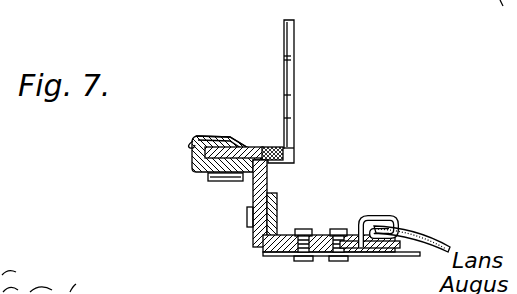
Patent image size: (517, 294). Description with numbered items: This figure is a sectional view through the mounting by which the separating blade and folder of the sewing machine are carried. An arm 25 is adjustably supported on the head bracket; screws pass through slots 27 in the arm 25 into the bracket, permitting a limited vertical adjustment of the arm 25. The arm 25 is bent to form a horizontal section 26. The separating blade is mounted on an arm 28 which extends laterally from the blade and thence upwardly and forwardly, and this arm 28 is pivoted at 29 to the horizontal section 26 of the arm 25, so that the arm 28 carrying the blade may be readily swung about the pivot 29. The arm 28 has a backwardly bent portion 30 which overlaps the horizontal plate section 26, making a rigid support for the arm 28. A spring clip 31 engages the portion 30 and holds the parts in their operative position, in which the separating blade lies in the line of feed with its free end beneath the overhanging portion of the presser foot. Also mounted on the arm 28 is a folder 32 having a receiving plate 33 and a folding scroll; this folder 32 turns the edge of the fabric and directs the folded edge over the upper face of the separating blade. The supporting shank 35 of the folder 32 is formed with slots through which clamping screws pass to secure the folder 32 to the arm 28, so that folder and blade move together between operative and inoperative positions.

The arm 25 is at (296, 26).
The horizontal section 26 is at (206, 174).
The slots 27 is at (293, 97).
The arm 28 is at (254, 197).
The pivot 29 is at (269, 180).
The backwardly bent portion 30 is at (192, 145).
The spring clip 31 is at (207, 136).
The folder 32 is at (365, 218).
The receiving plate 33 is at (438, 235).
The supporting shank 35 is at (316, 240).